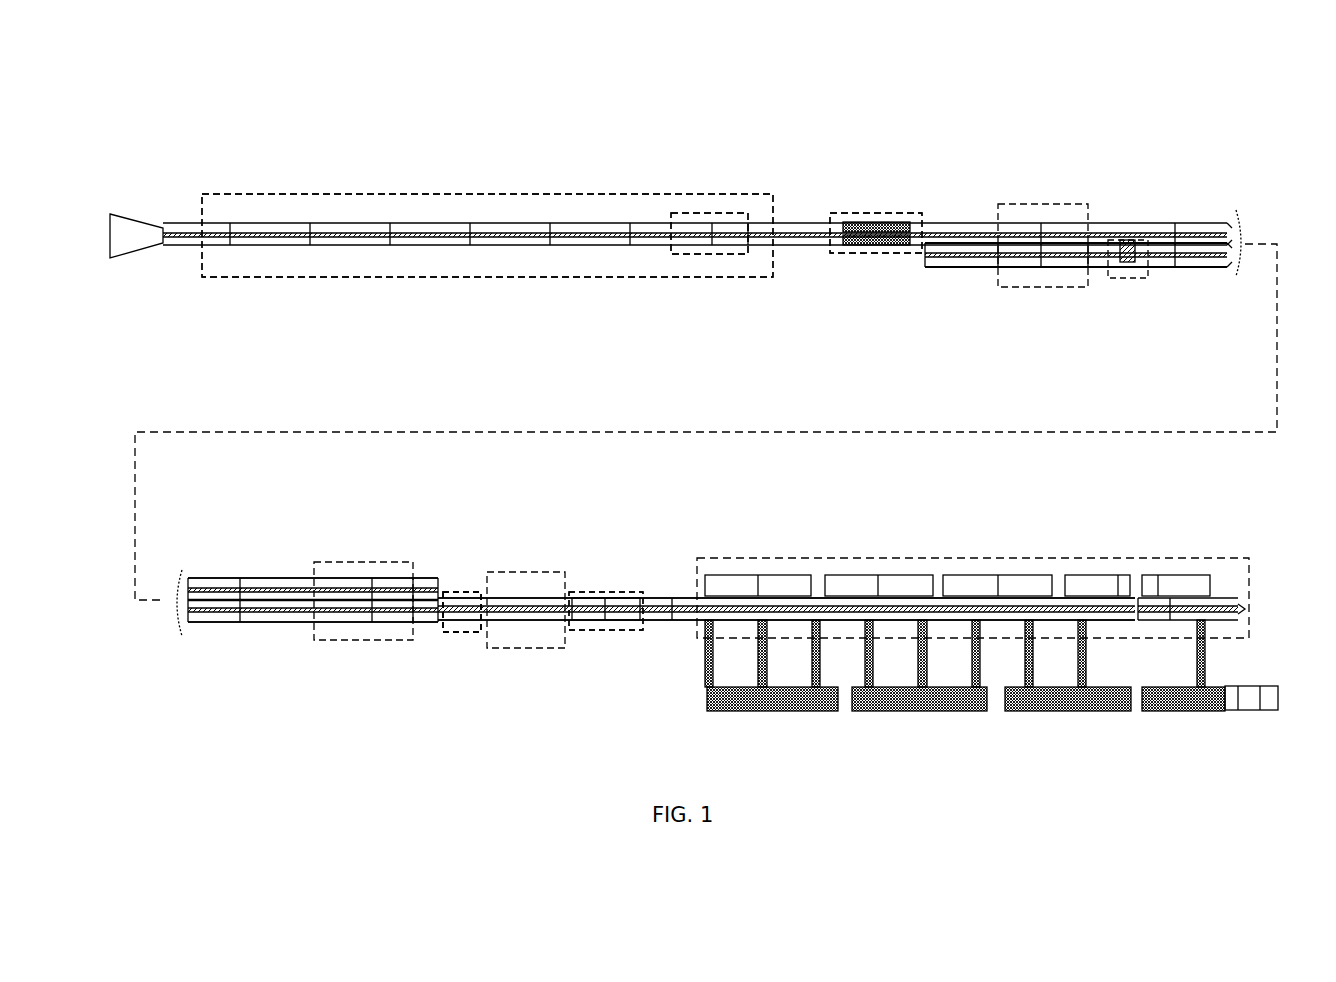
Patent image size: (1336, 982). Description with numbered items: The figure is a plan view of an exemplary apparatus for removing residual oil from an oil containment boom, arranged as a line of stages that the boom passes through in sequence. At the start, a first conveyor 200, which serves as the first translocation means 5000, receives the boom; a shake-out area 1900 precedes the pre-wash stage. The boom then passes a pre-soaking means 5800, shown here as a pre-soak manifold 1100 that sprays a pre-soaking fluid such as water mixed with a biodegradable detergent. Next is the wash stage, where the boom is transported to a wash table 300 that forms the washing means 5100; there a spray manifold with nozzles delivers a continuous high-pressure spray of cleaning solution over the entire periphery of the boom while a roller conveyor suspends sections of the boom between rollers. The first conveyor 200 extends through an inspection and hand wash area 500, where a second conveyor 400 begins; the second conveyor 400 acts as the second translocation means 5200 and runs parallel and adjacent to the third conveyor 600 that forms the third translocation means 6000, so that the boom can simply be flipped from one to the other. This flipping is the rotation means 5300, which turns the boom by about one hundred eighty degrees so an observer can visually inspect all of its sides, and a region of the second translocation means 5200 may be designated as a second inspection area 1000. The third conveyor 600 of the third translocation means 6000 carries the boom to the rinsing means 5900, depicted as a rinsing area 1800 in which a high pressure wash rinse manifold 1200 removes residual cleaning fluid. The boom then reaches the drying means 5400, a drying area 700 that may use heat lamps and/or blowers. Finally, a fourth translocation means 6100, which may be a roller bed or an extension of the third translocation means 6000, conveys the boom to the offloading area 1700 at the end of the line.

The first conveyor 200 is at (350, 208).
The first translocation means 5000 is at (487, 200).
The shake-out area 1900 is at (494, 193).
The pre-soak manifold 1100 is at (692, 212).
The pre-soaking means 5800 is at (690, 189).
The wash table 300 is at (858, 208).
The washing means 5100 is at (861, 188).
The second conveyor 400 is at (958, 215).
The second translocation means 5200 is at (1070, 211).
The inspection and hand wash area 500 is at (1047, 198).
The conduit 600 is at (960, 265).
The third translocation means 6000 is at (707, 486).
The fourth translocation means 6100 is at (786, 561).
The rotation means 5300 is at (1250, 232).
The second inspection area 1000 is at (357, 552).
The high pressure wash rinse manifold 1200 is at (462, 592).
The rinsing area 1800 is at (458, 560).
The rinsing means 5900 is at (458, 575).
The drying area 700 is at (612, 592).
The drying means 5400 is at (606, 561).
The offloading area 1700 is at (978, 552).